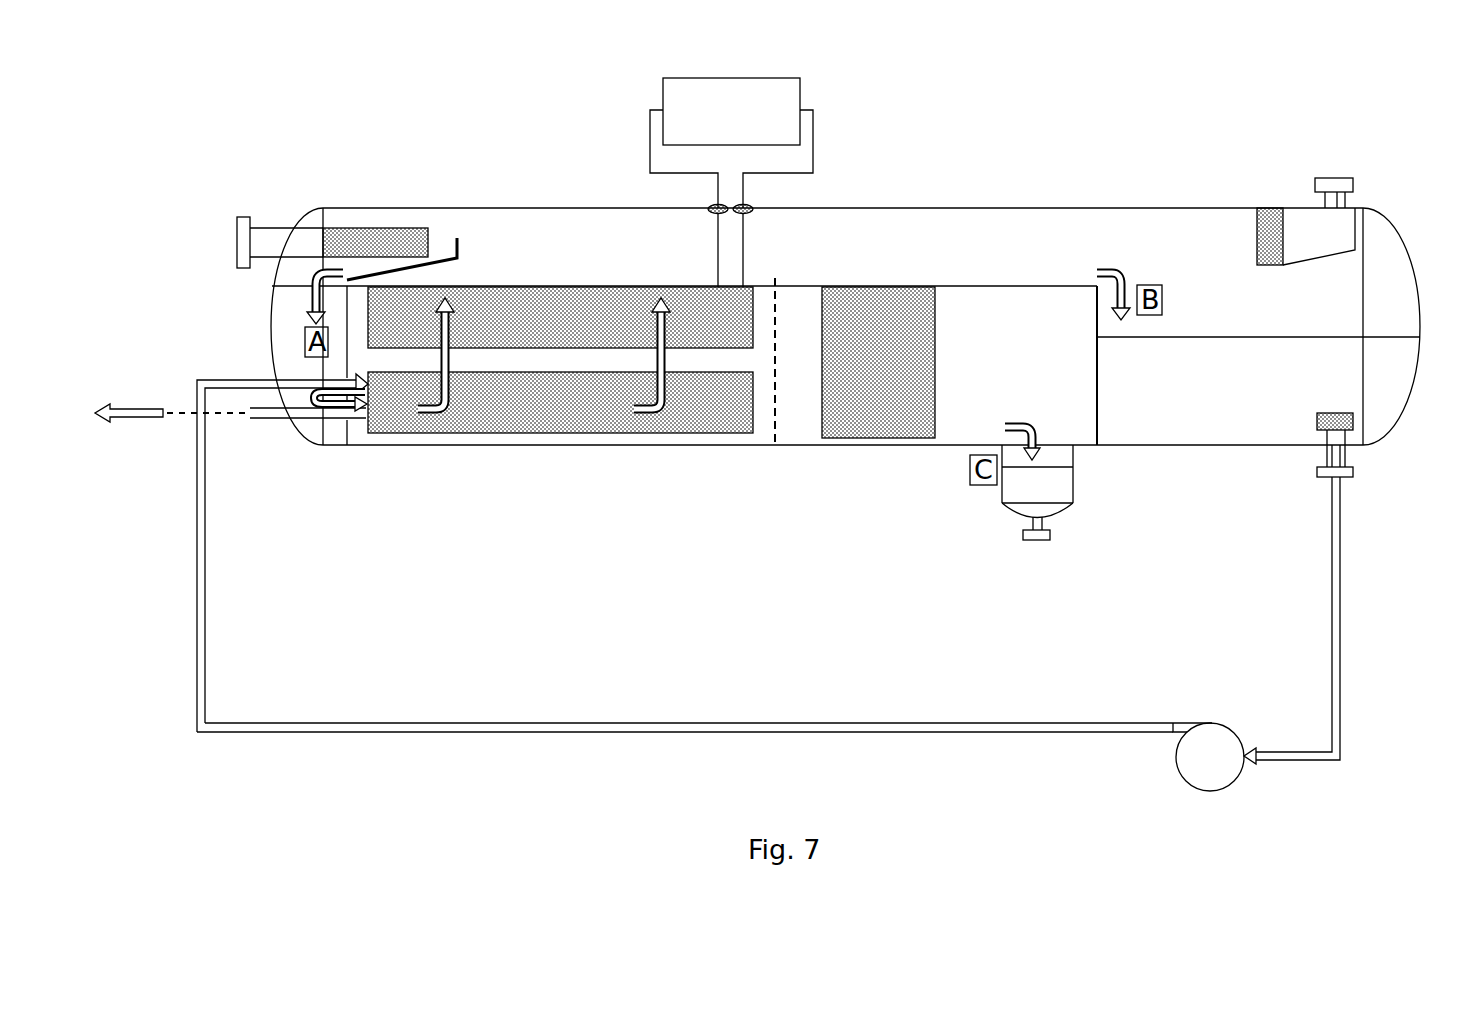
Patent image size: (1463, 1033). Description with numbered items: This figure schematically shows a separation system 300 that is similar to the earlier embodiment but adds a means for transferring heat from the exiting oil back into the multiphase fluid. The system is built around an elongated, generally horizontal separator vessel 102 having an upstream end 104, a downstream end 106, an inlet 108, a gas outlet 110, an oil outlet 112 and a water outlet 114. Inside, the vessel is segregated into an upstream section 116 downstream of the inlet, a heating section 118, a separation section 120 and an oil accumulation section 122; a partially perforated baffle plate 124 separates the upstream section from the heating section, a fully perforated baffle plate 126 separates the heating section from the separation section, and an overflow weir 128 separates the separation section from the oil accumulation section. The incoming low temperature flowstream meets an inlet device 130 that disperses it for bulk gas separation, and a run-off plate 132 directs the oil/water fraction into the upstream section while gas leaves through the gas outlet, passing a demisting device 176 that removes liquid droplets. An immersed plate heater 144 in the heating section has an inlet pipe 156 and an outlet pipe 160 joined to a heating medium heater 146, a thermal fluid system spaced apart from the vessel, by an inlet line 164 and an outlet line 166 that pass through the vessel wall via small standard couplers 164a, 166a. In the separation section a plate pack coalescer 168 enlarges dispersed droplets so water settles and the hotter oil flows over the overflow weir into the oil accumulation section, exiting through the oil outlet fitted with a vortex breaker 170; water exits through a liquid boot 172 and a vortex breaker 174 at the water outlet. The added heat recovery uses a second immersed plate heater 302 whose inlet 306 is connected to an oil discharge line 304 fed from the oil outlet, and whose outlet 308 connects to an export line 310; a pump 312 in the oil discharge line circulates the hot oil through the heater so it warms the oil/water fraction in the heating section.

The separation system 300 is at (1105, 100).
The separator vessel 102 is at (975, 208).
The upstream end 104 is at (302, 430).
The downstream end 106 is at (1396, 425).
The inlet 108 is at (277, 227).
The gas outlet 110 is at (1350, 183).
The oil outlet 112 is at (1353, 478).
The water outlet 114 is at (1042, 541).
The upstream section 116 is at (292, 402).
The heating section 118 is at (592, 438).
The separation section 120 is at (806, 445).
The oil accumulation section 122 is at (1250, 446).
The partially perforated baffle plate 124 is at (343, 373).
The fully perforated baffle plate 126 is at (772, 445).
The overflow weir 128 is at (1095, 358).
The inlet device 130 is at (397, 230).
The run-off plate 132 is at (460, 248).
The immersed plate heater 144 is at (545, 286).
The heating medium heater 146 is at (731, 111).
The inlet pipe 156 is at (716, 268).
The outlet pipe 160 is at (745, 252).
The inlet line 164 is at (650, 140).
The coupler 164a is at (710, 206).
The outlet line 166 is at (813, 136).
The coupler 166a is at (751, 205).
The plate pack coalescer 168 is at (925, 350).
The vortex breaker 170 is at (1332, 412).
The liquid boot 172 is at (1075, 493).
The vortex breaker 174 is at (1075, 458).
The demisting device 176 is at (1260, 242).
The immersed plate heater 302 is at (483, 433).
The oil discharge line 304 is at (1015, 723).
The inlet 306 is at (363, 402).
The outlet 308 is at (366, 412).
The export line 310 is at (136, 425).
The pump 312 is at (1212, 722).